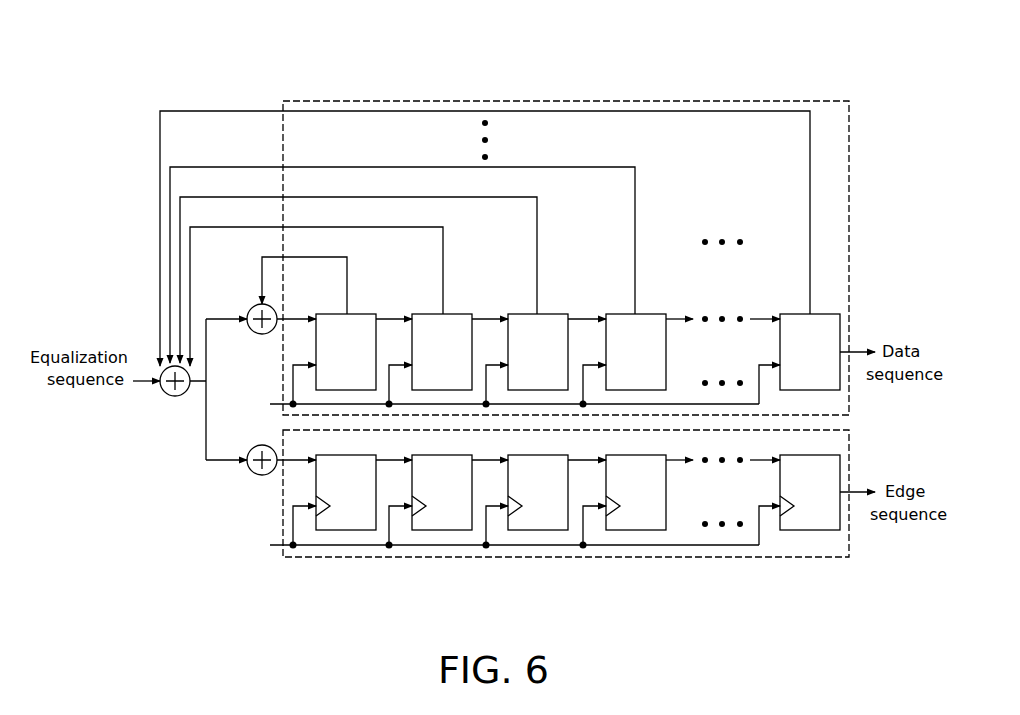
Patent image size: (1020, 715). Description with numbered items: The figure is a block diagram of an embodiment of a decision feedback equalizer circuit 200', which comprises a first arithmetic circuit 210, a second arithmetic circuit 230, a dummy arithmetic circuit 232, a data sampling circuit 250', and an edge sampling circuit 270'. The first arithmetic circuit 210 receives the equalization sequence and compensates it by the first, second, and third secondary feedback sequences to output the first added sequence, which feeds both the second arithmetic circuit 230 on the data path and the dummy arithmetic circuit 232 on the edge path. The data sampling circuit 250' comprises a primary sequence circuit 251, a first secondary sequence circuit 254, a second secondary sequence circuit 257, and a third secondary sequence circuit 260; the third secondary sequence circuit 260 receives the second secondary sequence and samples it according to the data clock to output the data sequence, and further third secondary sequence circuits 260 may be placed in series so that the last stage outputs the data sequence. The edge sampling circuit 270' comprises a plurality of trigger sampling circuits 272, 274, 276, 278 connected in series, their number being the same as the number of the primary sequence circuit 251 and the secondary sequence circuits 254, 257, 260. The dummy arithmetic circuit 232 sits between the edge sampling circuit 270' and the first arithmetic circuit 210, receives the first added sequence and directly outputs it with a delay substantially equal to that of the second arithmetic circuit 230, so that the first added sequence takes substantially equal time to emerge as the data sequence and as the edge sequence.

The equalizer circuit 200' is at (526, 317).
The first arithmetic circuit 210 is at (175, 397).
The second arithmetic circuit 230 is at (262, 335).
The dummy arithmetic circuit 232 is at (262, 476).
The data sampling circuit 250' is at (568, 231).
The primary sequence circuit 251 is at (370, 312).
The first secondary sequence circuit 254 is at (470, 312).
The second secondary sequence circuit 257 is at (566, 312).
The third secondary sequence circuit 260 is at (662, 312).
The edge sampling circuit 270' is at (572, 523).
The trigger sampling circuit 272 is at (348, 532).
The trigger sampling circuit 274 is at (442, 532).
The trigger sampling circuit 276 is at (537, 532).
The trigger sampling circuit 278 is at (632, 532).